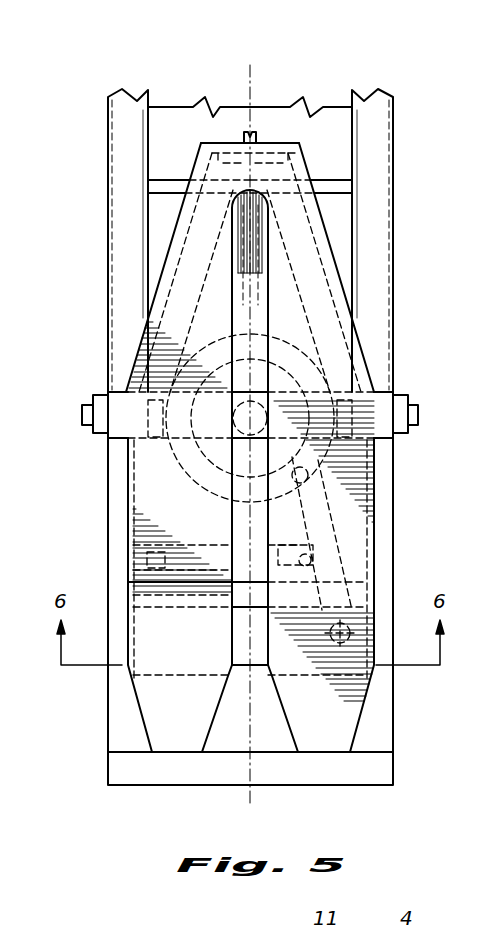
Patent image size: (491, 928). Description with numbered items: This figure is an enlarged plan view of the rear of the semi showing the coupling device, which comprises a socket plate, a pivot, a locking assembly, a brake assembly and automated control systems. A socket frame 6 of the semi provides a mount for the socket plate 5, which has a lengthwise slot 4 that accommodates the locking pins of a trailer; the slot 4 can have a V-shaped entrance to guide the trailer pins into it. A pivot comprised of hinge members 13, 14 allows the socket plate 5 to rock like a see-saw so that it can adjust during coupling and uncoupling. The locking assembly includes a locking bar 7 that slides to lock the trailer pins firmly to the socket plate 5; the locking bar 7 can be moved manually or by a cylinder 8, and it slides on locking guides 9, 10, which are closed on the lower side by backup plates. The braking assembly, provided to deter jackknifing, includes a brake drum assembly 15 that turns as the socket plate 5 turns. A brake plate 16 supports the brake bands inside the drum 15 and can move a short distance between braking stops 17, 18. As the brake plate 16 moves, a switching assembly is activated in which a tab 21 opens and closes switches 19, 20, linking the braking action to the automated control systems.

The lengthwise slot 4 is at (242, 513).
The socket plate 5 is at (343, 702).
The socket frame 6 is at (375, 742).
The locking bar 7 is at (325, 655).
The cylinder 8 is at (177, 558).
The locking guide 9 is at (182, 668).
The locking guide 10 is at (178, 598).
The hinge member 13 is at (397, 400).
The hinge member 14 is at (110, 397).
The brake drum assembly 15 is at (190, 465).
The brake plate 16 is at (287, 303).
The braking stop 17 is at (327, 182).
The braking stop 18 is at (165, 185).
The switch 19 is at (273, 143).
The switch 20 is at (217, 145).
The tab 21 is at (245, 133).